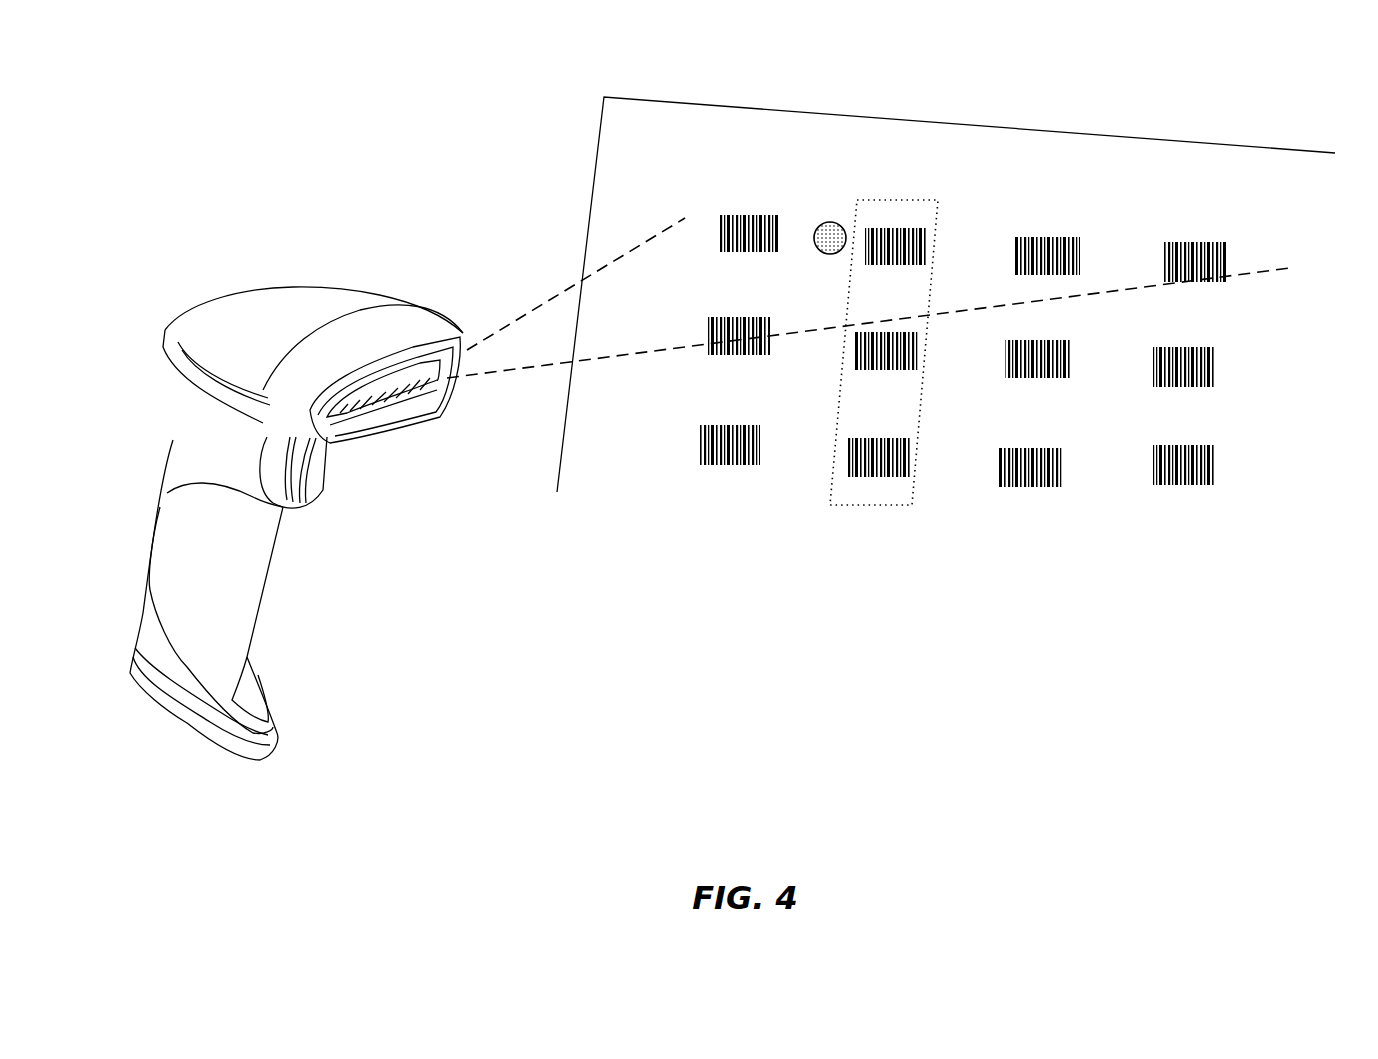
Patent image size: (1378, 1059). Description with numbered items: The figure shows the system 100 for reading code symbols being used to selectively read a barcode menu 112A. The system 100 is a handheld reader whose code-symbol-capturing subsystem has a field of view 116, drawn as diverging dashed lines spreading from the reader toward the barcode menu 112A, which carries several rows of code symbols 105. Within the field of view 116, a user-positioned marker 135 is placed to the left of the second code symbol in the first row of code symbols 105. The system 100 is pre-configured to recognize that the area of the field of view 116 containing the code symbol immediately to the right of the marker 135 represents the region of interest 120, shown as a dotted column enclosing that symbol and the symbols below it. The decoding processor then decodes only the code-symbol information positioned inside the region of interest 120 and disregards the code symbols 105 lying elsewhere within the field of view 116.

The system for reading code symbols 100 is at (287, 323).
The barcodes / indicia 105 is at (1190, 480).
The barcode menu 112A is at (610, 460).
The field of view 116 is at (868, 295).
The region of interest 120 is at (923, 200).
The user-positioned marker 135 is at (820, 223).